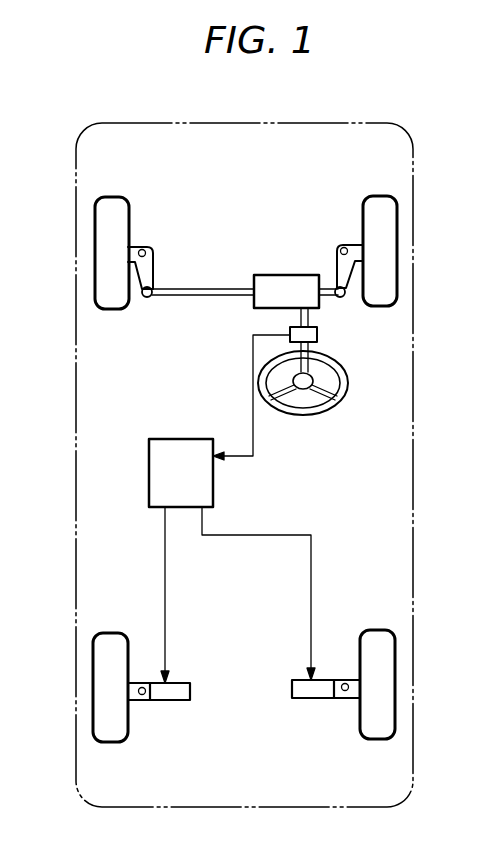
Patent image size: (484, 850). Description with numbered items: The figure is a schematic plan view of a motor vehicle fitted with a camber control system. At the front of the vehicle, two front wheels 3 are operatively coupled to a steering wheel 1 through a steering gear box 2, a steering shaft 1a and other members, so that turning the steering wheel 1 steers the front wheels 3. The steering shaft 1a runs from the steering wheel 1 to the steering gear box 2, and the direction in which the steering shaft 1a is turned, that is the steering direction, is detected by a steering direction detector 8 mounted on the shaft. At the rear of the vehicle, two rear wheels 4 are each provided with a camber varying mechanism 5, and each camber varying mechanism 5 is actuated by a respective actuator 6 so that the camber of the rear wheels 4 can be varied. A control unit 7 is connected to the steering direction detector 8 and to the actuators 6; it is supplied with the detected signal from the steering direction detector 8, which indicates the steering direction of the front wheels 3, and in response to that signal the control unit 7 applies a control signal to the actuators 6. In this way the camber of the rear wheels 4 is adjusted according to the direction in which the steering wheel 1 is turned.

The steering wheel 1 is at (322, 413).
The steering shaft 1a is at (310, 318).
The steering gear box 2 is at (282, 284).
The front wheels 3 is at (100, 253).
The rear wheels 4 is at (95, 694).
The camber varying mechanisms 5 is at (139, 701).
The actuators 6 is at (175, 701).
The control unit 7 is at (175, 450).
The steering direction detector 8 is at (317, 337).